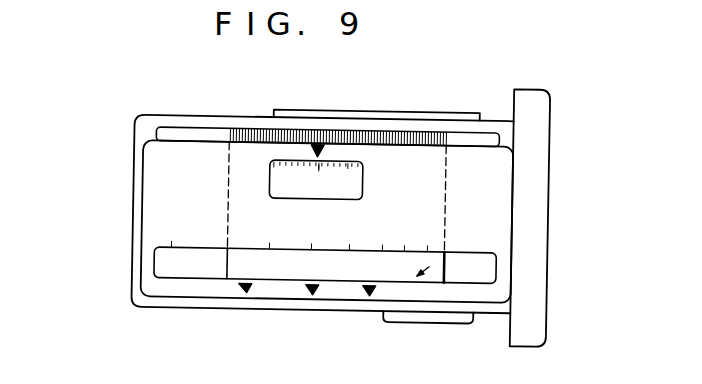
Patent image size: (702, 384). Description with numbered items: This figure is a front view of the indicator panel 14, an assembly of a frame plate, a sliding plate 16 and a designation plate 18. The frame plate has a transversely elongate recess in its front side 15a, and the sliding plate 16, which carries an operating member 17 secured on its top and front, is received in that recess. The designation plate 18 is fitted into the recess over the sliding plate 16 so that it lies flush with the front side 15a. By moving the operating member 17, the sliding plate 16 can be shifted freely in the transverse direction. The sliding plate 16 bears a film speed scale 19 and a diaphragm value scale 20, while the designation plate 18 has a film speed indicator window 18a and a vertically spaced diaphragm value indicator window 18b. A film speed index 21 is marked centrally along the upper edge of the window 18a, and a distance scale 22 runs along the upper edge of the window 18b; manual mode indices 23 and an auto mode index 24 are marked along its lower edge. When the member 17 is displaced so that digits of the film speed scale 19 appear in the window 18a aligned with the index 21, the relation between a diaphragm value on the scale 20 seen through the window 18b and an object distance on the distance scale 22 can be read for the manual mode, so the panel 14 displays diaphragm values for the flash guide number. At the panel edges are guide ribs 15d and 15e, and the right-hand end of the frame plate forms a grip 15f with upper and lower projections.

The indicator panel 14 is at (190, 100).
The front side of frame plate 15a is at (150, 135).
The guide rib 15d is at (398, 112).
The guide rib 15e is at (432, 316).
The grip 15f is at (530, 196).
The sliding plate 16 is at (228, 260).
The operating member 17 is at (357, 136).
The designation plate 18 is at (150, 171).
The film speed indicator window 18a is at (362, 193).
The diaphragm value indicator window 18b is at (450, 248).
The film speed scale 19 is at (315, 186).
The diaphragm value scale 20 is at (446, 268).
The film speed index 21 is at (317, 143).
The distance scale 22 is at (494, 230).
The manual mode indices 23 is at (248, 296).
The auto mode index 24 is at (369, 297).